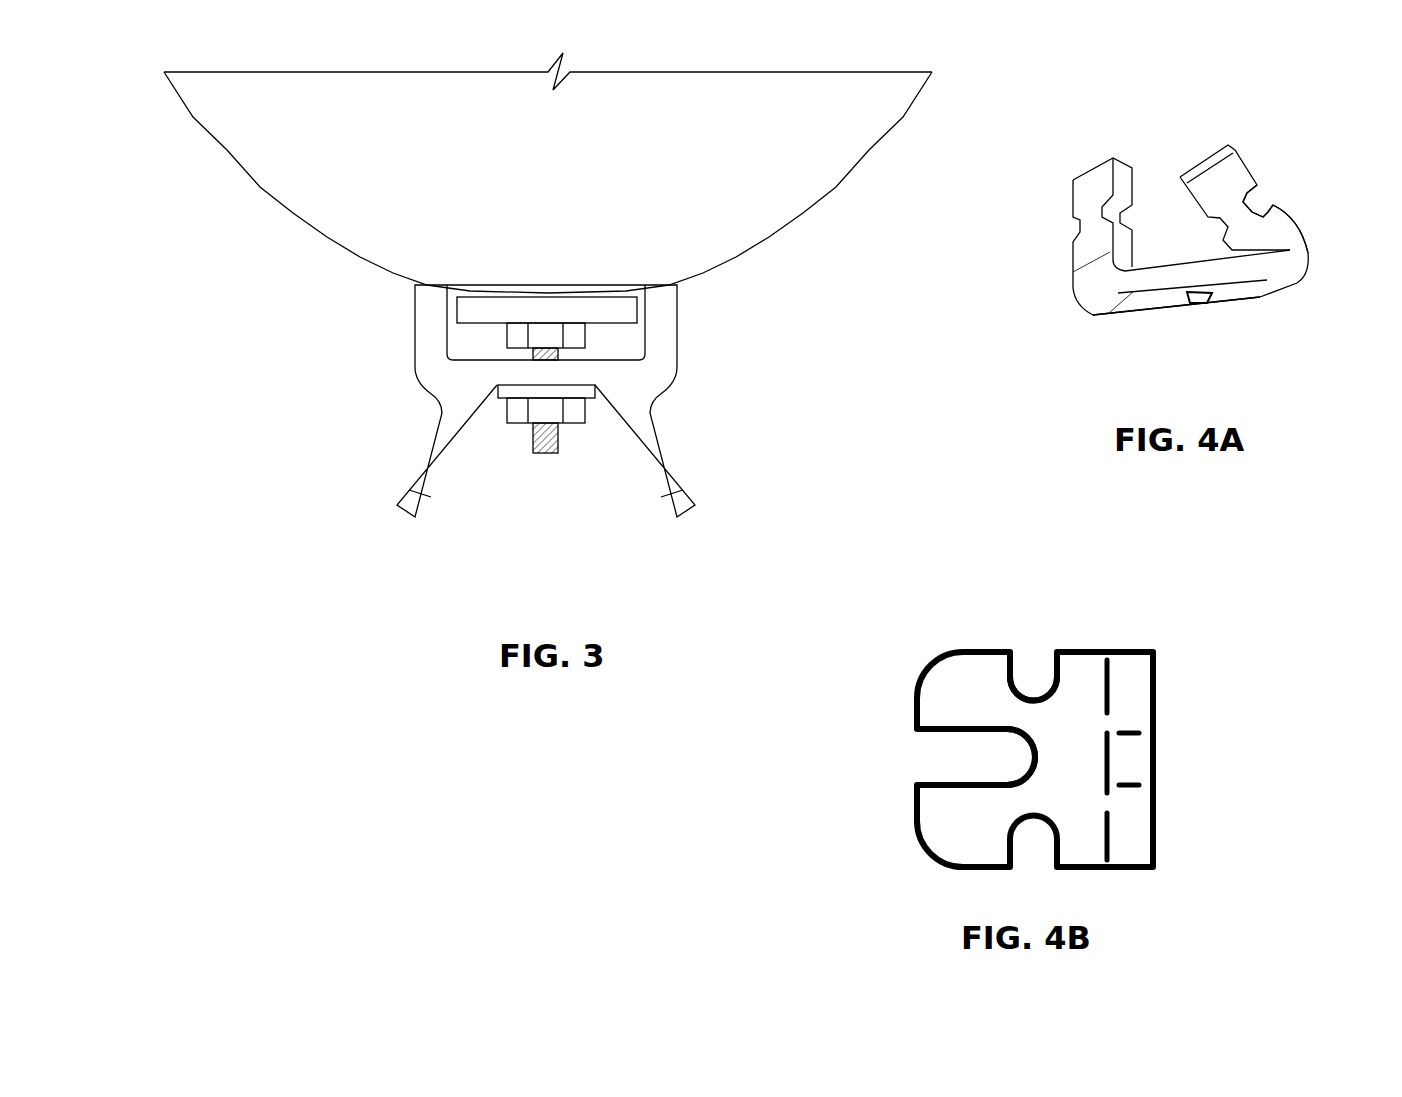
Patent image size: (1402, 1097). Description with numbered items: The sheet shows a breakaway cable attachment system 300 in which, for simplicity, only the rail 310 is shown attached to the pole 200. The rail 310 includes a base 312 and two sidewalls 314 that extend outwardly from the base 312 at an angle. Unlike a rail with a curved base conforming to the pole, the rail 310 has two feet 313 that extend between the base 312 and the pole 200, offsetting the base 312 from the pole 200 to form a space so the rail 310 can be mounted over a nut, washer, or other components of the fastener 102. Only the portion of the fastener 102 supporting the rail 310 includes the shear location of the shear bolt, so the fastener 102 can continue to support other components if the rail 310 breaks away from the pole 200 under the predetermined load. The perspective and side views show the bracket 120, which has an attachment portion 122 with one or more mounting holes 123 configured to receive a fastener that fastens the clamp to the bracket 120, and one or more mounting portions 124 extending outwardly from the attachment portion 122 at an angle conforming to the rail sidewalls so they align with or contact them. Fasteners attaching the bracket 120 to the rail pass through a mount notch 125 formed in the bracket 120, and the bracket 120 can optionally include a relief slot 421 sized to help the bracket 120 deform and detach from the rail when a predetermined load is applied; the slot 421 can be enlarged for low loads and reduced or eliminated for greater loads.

In FIG. 3, the fastener 102 is at (547, 454).
In FIG. 4A, the bracket 120 is at (1066, 333).
In FIG. 4B, the bracket 120 is at (934, 643).
In FIG. 4A, the attachment portion 122 is at (1233, 302).
In FIG. 4B, the attachment portion 122 is at (1157, 703).
In FIG. 4A, the mounting hole 123 is at (1197, 303).
In FIG. 4B, the mounting hole 123 is at (1125, 786).
In FIG. 4A, the mounting portion 124 is at (1288, 213).
In FIG. 4B, the mounting portion 124 is at (1076, 650).
In FIG. 4A, the mount notch 125 is at (1257, 202).
In FIG. 4B, the mount notch 125 is at (1043, 650).
In FIG. 3, the pole 200 is at (262, 188).
In FIG. 3, the breakaway cable attachment system 300 is at (852, 314).
In FIG. 3, the rail 310 is at (324, 357).
In FIG. 3, the base 312 is at (613, 358).
In FIG. 3, the feet 313 is at (416, 313).
In FIG. 3, the sidewalls 314 is at (417, 470).
In FIG. 4B, the relief slot 421 is at (943, 733).